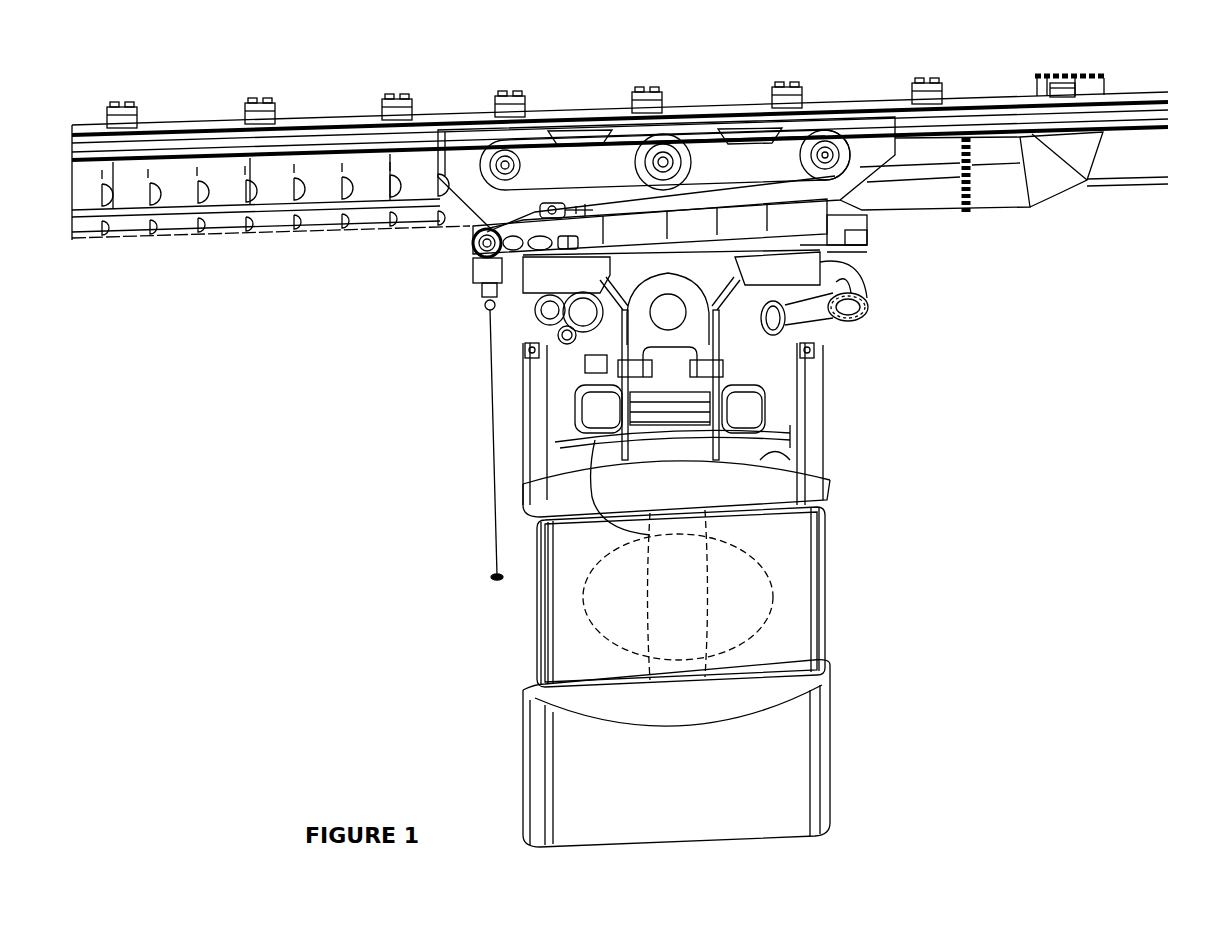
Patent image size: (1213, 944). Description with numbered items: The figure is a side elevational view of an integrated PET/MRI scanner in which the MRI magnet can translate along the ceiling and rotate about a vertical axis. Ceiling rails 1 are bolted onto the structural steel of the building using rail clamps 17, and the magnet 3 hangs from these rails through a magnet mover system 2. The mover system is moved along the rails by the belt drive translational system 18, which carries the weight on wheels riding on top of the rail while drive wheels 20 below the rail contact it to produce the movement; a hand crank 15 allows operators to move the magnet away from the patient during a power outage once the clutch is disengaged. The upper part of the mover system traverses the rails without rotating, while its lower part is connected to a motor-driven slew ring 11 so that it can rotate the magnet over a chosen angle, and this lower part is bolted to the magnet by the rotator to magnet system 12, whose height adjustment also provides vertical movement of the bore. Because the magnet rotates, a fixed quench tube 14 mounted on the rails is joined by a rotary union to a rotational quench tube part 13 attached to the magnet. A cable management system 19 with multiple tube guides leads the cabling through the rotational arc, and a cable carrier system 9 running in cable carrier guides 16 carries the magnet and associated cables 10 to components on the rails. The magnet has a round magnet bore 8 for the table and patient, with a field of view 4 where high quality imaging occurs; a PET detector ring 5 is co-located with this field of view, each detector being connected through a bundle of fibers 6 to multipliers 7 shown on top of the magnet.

The ceiling rails 1 is at (620, 131).
The magnet mover system 2 is at (935, 210).
The magnet 3 is at (652, 774).
The field of view 4 is at (499, 603).
The PET detector ring 5 is at (597, 613).
The bundle of fibers 6 is at (534, 519).
The multipliers 7 is at (510, 414).
The magnet bore 8 is at (713, 597).
The cable carrier system 9 is at (271, 284).
The magnet and associated cables 10 is at (256, 289).
The slew ring 11 is at (873, 276).
The rotator to magnet system 12 is at (751, 366).
The rotational quench tube part 13 is at (865, 324).
The fixed quench tube 14 is at (1094, 205).
The hand crank 15 is at (445, 404).
The cable carrier guides 16 is at (260, 228).
The rail clamps 17 is at (413, 79).
The belt drive translational system 18 is at (665, 111).
The cable management system 19 is at (494, 360).
The drive wheels 20 is at (835, 103).